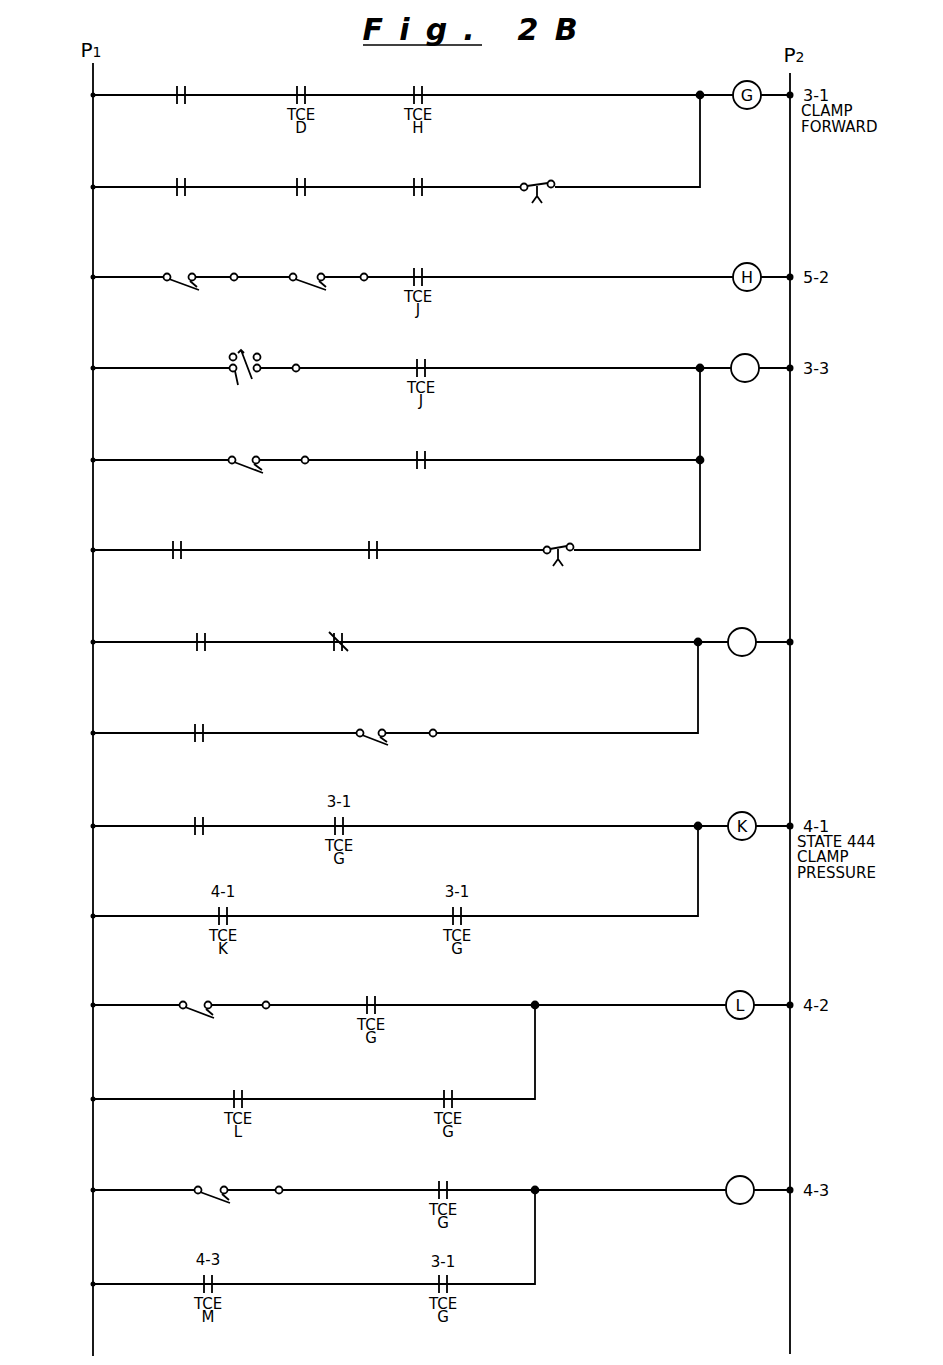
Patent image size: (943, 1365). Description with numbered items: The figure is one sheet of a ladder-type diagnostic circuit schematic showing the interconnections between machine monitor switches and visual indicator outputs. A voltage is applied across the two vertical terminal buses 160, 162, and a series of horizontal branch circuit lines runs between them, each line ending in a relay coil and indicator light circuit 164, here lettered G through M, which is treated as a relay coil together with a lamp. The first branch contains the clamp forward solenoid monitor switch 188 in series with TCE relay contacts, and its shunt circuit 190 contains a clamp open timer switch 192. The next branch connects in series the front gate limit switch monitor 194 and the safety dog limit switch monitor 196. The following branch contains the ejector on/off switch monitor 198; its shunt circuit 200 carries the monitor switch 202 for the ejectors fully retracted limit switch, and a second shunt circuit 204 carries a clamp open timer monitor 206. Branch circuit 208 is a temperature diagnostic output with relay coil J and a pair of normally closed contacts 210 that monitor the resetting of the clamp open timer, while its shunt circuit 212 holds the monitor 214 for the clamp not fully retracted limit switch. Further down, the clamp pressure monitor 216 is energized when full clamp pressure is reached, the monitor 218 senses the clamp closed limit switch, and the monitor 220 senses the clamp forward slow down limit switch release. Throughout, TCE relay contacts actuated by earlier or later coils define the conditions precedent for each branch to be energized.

The terminal bus 160 is at (93, 126).
The terminal bus 162 is at (792, 229).
The relay coil and indicator light circuit 164 is at (739, 357).
The clamp forward solenoid monitor switch 188 is at (176, 102).
The shunt circuit 190 is at (631, 189).
The clamp open timer switch 192 is at (543, 192).
The front gate limit switch monitor 194 is at (172, 283).
The safety dog limit switch monitor 196 is at (325, 292).
The ejector on/off switch monitor 198 is at (248, 372).
The shunt circuit 200 is at (160, 463).
The ejectors return switch 202 is at (232, 465).
The second shunt circuit 204 is at (622, 552).
The clamp open timer monitor 206 is at (548, 555).
The branch circuit 208 is at (775, 640).
The normally closed contacts 210 is at (344, 637).
The shunt circuit 212 is at (534, 736).
The monitor 214 is at (361, 738).
The clamp pressure monitor 216 is at (194, 831).
The monitor 218 is at (190, 1010).
The monitor 220 is at (200, 1198).